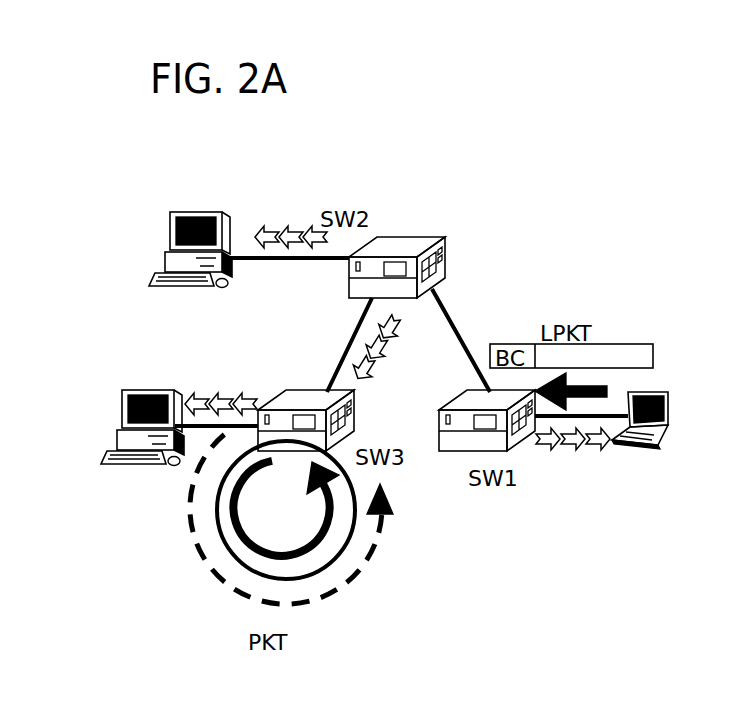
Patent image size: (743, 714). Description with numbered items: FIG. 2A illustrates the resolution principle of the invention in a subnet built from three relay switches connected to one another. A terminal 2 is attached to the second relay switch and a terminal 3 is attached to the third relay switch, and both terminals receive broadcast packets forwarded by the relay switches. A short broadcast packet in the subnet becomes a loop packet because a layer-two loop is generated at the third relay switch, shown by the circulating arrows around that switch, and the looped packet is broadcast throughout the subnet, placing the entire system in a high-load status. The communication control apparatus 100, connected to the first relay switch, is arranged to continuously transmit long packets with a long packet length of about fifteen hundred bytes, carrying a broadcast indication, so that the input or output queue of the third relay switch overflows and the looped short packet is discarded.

The terminal 2 is at (198, 212).
The terminal 3 is at (140, 392).
The communication control apparatus 100 is at (642, 392).